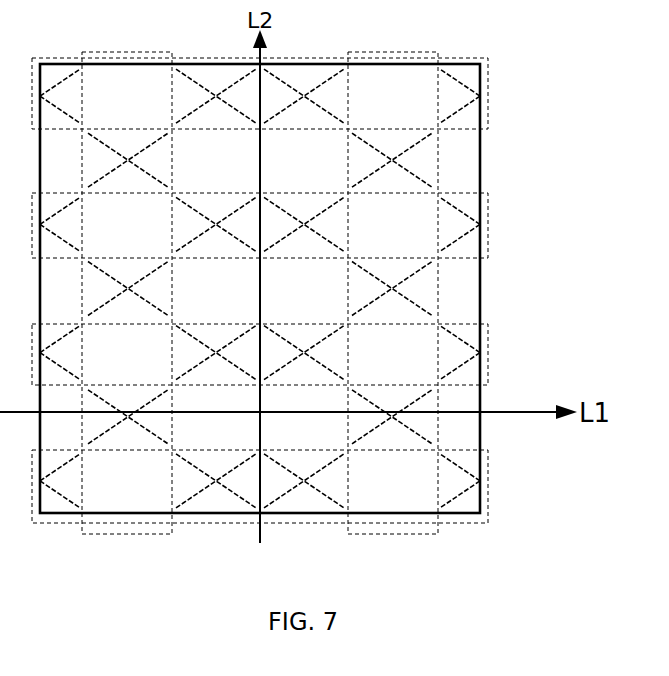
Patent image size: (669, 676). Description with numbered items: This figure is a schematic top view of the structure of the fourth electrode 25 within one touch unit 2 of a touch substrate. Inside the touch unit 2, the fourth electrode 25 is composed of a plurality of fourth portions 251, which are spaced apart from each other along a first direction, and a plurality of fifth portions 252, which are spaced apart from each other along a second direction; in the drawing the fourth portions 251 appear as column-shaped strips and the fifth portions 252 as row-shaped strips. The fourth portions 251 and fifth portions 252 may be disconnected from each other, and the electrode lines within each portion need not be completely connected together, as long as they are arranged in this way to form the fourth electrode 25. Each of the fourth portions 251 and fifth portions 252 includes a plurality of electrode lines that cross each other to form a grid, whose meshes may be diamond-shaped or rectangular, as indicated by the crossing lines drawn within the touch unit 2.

The touch unit 2 is at (467, 64).
The fourth electrode 25 is at (303, 322).
The fourth portions 251 is at (403, 534).
The fifth portions 252 is at (303, 290).